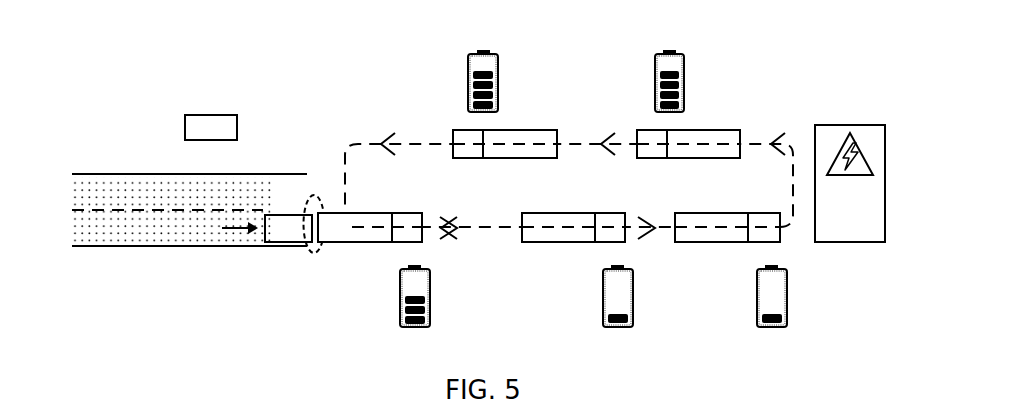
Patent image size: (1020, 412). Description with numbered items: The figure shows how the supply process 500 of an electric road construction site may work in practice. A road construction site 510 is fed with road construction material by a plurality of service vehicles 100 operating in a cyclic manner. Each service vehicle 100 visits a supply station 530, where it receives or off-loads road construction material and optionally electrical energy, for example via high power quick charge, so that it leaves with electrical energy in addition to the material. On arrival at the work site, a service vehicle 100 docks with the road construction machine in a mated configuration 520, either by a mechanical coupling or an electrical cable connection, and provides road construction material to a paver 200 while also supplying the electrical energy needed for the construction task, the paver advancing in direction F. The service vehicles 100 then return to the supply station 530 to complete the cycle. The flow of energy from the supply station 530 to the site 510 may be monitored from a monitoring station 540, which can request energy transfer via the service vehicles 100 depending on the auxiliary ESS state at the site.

The supply process 500 is at (104, 74).
The road construction site 510 is at (175, 247).
The mated configuration 520 is at (323, 195).
The supply station 530 is at (867, 218).
The monitoring station 540 is at (210, 115).
The paver 200 is at (290, 242).
The service vehicle 100 is at (518, 137).